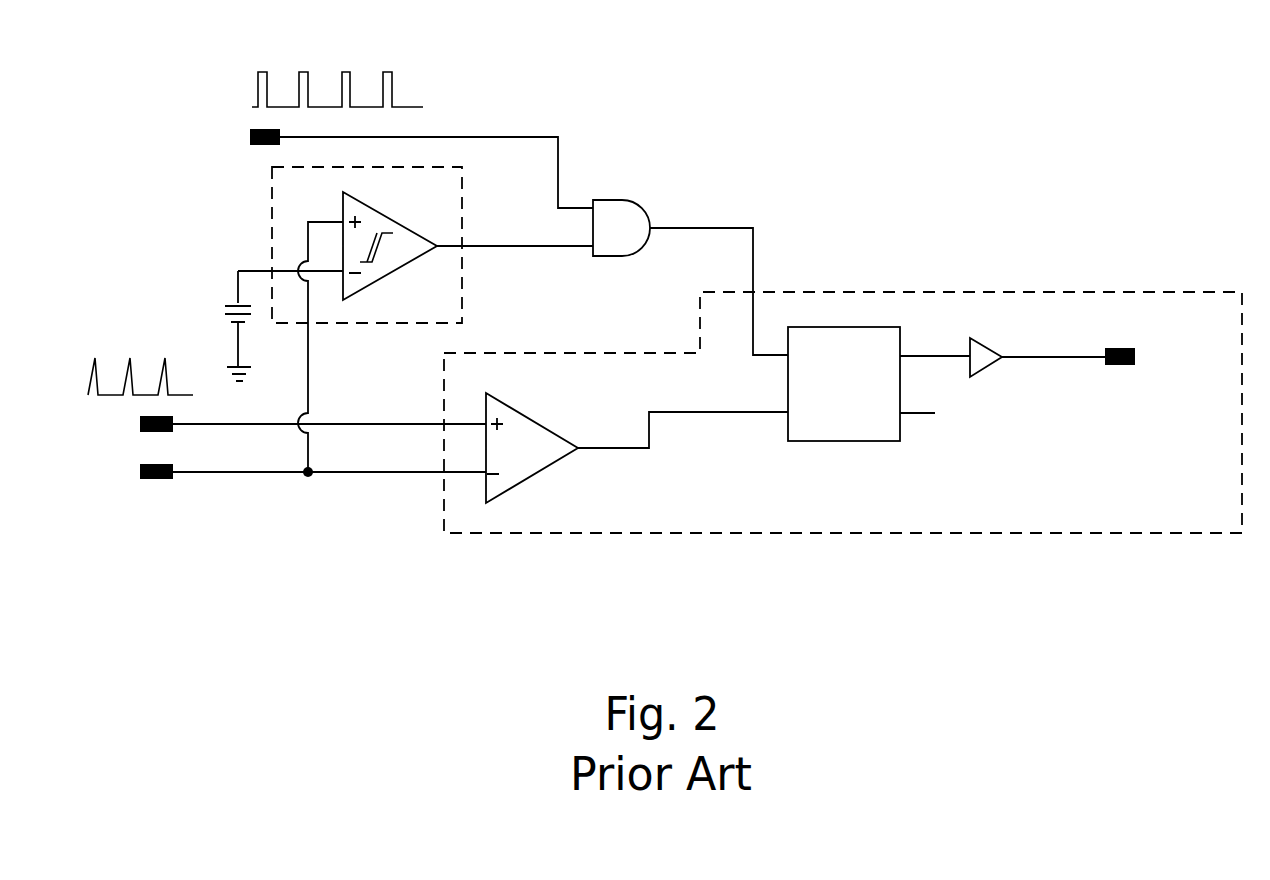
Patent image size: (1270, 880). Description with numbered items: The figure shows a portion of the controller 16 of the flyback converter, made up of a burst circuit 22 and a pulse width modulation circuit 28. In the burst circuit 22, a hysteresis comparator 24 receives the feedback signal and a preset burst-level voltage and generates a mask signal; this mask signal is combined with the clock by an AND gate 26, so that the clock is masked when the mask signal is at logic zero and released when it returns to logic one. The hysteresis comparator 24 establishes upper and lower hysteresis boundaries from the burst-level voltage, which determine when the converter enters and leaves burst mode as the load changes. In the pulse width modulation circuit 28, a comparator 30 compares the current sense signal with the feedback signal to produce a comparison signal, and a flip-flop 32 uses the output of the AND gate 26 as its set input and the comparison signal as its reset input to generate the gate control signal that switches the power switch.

The controller 16 is at (1193, 115).
The burst circuit 22 is at (272, 207).
The hysteresis comparator 24 is at (392, 216).
The AND gate 26 is at (618, 199).
The pulse width modulation (PWM) circuit 28 is at (966, 292).
The comparator 30 is at (532, 418).
The flip-flop 32 is at (840, 441).